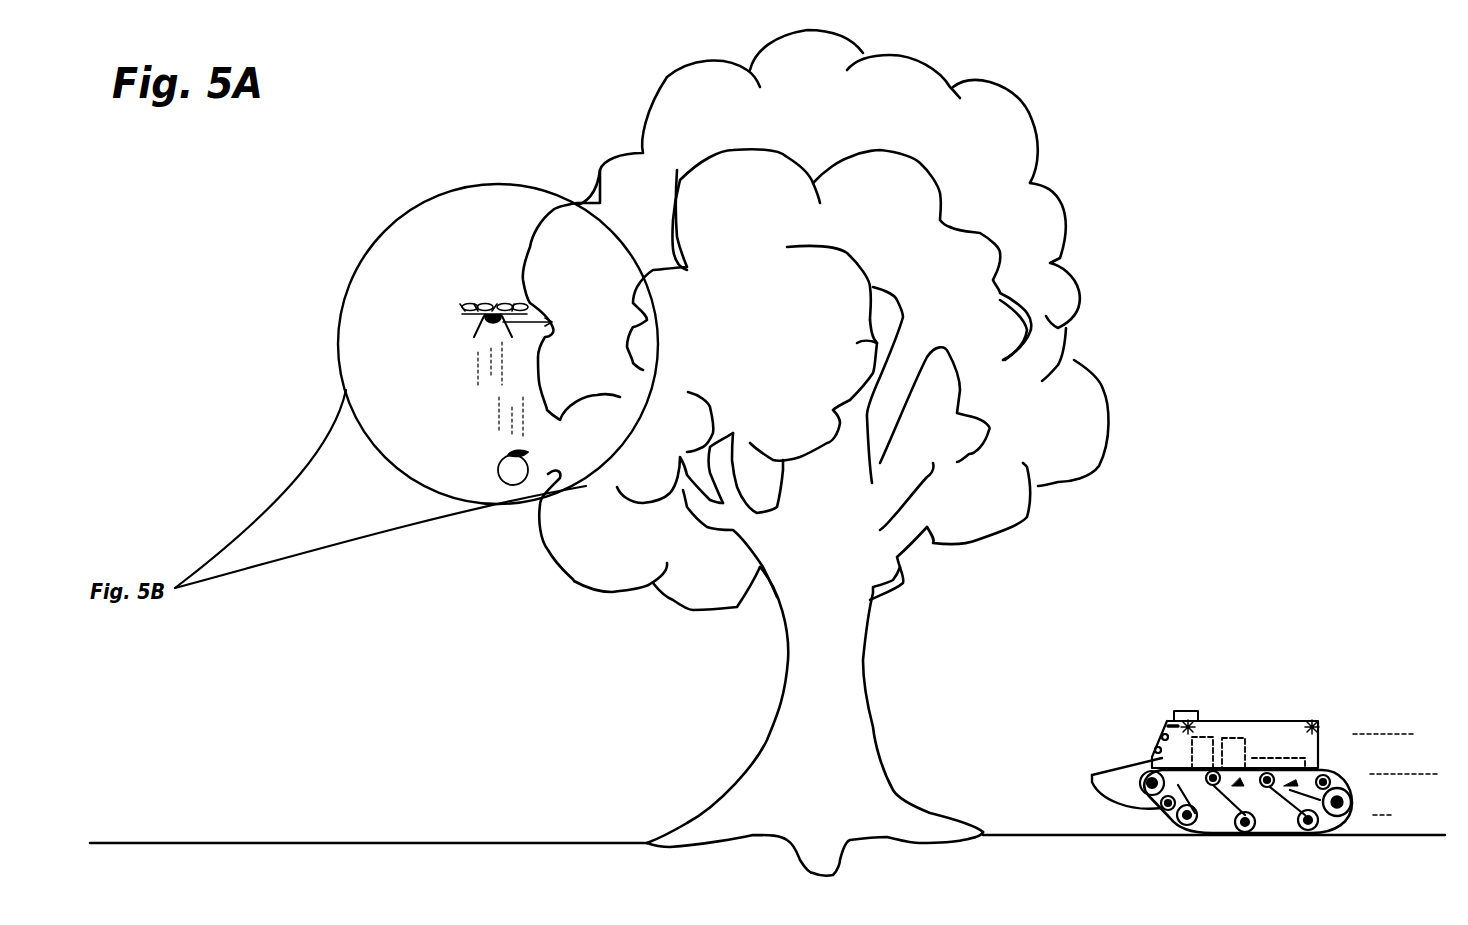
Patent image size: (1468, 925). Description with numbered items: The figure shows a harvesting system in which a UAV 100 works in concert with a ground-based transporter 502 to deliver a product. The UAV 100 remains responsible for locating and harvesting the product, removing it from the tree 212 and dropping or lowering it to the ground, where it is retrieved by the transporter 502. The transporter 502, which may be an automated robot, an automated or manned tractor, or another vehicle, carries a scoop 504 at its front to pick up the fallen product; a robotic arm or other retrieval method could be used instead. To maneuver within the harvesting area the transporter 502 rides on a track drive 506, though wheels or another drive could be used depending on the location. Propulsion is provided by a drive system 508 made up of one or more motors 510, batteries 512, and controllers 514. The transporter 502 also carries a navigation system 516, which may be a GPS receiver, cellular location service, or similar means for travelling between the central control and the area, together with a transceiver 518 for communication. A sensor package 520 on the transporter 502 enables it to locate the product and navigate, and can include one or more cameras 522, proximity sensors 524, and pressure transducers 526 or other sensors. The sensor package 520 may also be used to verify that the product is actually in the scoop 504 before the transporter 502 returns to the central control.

The UAV 100 is at (477, 303).
The tree 212 is at (1079, 281).
The transporter 502 is at (1224, 752).
The scoop 504 is at (1090, 790).
The track drive 506 is at (1322, 830).
The drive system 508 is at (1218, 840).
The motors 510 is at (1355, 793).
The batteries 512 is at (1233, 740).
The controllers 514 is at (1307, 757).
The navigation system 516 is at (1182, 710).
The transceiver 518 is at (1207, 747).
The sensor package 520 is at (1092, 730).
The cameras 522 is at (1153, 750).
The proximity sensors 524 is at (1160, 738).
The pressure transducers 526 is at (1173, 727).